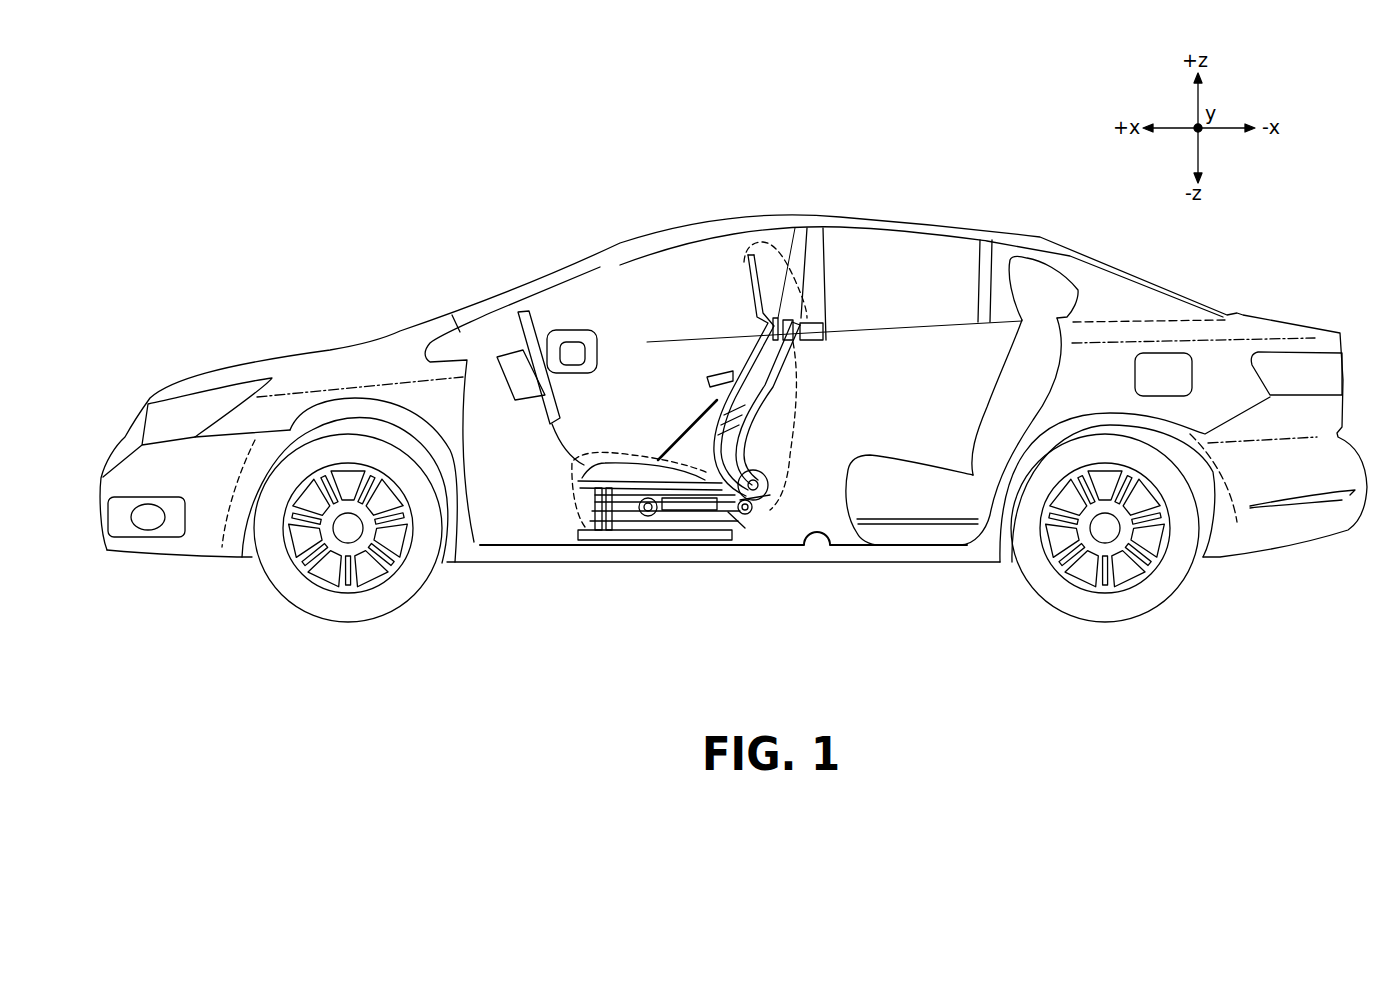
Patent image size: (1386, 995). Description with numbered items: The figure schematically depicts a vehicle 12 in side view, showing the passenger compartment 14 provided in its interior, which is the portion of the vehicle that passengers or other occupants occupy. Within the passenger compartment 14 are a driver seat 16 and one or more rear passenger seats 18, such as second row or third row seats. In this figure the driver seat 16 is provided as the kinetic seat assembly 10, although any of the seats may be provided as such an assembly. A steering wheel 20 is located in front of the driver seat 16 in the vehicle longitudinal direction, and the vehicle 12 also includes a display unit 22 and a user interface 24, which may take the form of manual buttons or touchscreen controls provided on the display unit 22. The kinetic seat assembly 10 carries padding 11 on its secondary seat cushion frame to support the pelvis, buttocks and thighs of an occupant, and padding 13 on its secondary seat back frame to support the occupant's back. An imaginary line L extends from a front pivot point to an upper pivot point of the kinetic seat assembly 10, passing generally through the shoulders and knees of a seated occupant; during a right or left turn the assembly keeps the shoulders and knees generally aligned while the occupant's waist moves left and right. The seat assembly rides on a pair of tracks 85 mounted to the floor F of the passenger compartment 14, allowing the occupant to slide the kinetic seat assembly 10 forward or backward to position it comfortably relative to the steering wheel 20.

The kinetic seat assembly 10 is at (807, 382).
The padding 11 is at (600, 447).
The vehicle 12 is at (957, 215).
The padding 13 is at (752, 328).
The passenger compartment 14 is at (929, 363).
The driver seat 16 is at (788, 425).
The rear passenger seats 18 is at (995, 382).
The steering wheel 20 is at (523, 313).
The display unit 22 is at (573, 333).
The user interface 24 is at (577, 353).
The tracks 85 is at (598, 545).
The imaginary line L is at (684, 433).
The floor F is at (831, 547).